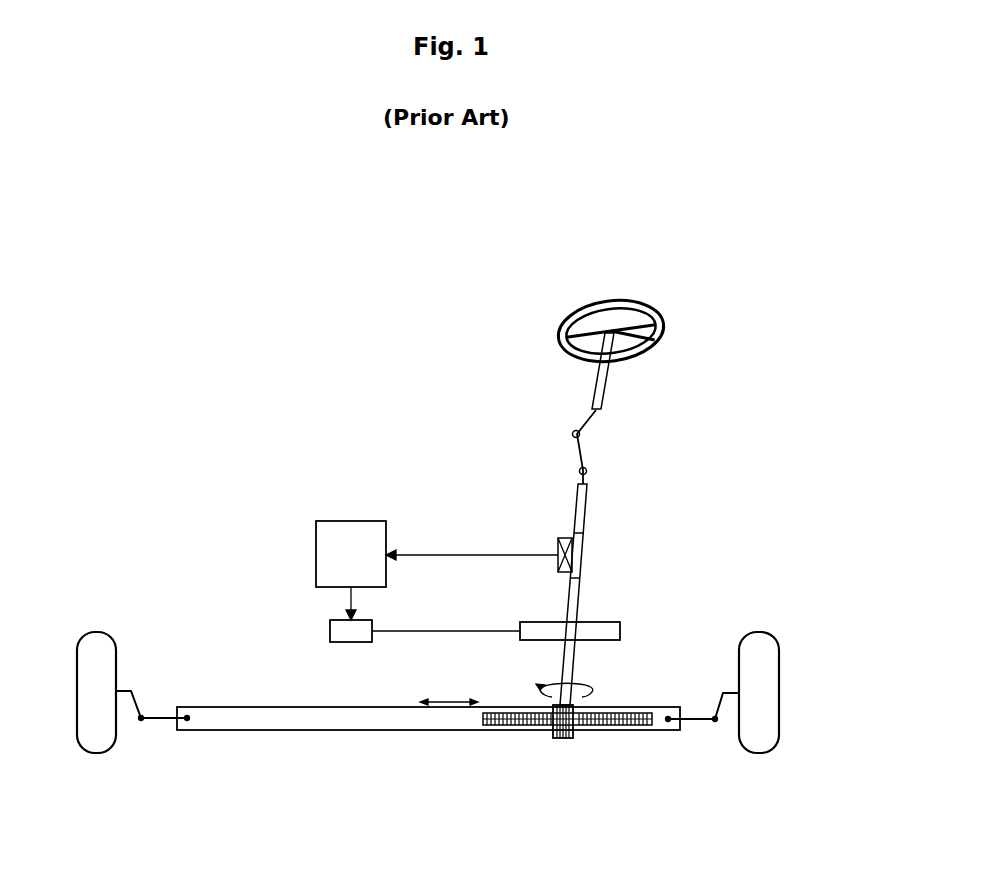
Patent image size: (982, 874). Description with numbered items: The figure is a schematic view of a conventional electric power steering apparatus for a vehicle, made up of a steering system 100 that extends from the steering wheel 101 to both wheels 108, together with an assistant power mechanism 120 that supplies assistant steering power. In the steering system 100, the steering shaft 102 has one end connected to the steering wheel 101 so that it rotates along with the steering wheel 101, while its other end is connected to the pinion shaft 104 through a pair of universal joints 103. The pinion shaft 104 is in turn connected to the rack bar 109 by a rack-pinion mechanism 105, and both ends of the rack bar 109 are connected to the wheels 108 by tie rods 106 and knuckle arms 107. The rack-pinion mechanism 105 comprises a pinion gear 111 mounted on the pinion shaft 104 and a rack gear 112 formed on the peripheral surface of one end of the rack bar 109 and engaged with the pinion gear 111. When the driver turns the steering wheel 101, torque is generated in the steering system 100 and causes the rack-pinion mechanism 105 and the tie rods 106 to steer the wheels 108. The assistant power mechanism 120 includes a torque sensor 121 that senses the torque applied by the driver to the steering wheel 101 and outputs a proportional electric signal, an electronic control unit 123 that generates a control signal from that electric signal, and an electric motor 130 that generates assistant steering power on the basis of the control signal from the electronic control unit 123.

The steering system 100 is at (657, 307).
The steering wheel 101 is at (558, 323).
The steering shaft 102 is at (608, 378).
The universal joints 103 is at (580, 434).
The pinion shaft 104 is at (582, 585).
The rack-pinion mechanism 105 is at (567, 776).
The tie rods 106 is at (693, 722).
The knuckle arms 107 is at (718, 703).
The wheels 108 is at (113, 637).
The rack bar 109 is at (442, 730).
The pinion gear 111 is at (565, 752).
The rack gear 112 is at (623, 730).
The assistant power mechanism 120 is at (425, 468).
The torque sensor 121 is at (567, 538).
The electronic control unit 123 is at (316, 558).
The electric motor 130 is at (330, 628).